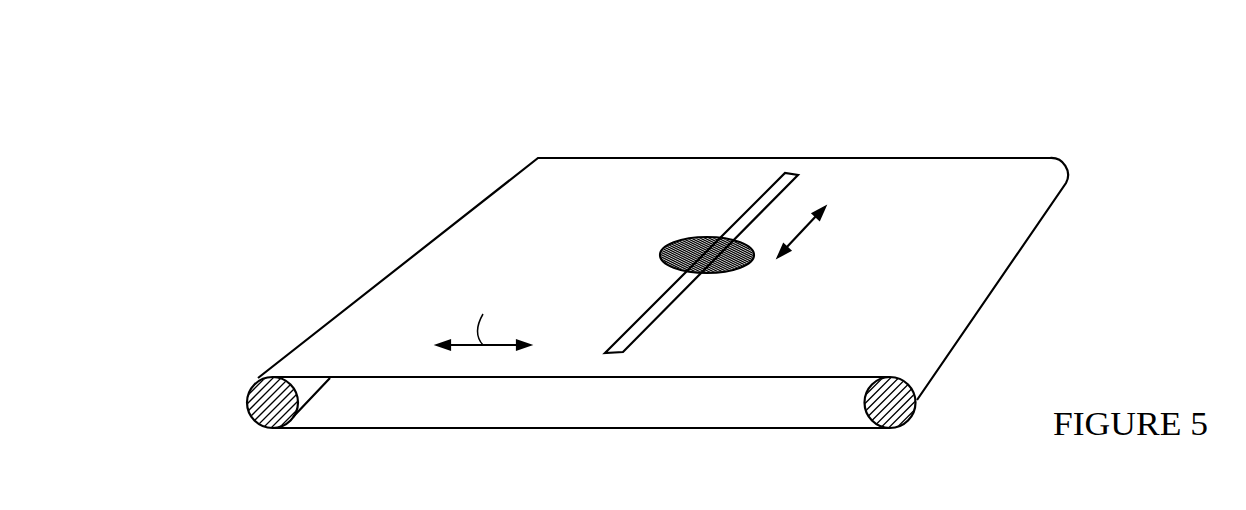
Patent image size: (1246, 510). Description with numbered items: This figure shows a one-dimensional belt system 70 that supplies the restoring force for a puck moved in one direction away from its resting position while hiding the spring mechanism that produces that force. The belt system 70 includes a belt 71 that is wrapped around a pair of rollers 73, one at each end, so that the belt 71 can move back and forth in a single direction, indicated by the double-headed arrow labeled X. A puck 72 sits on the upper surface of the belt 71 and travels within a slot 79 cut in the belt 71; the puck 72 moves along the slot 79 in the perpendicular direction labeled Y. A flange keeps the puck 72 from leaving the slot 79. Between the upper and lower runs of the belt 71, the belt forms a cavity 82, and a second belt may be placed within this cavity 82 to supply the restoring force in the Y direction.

The one-dimensional belt system 70 is at (627, 273).
The belt 71 is at (952, 158).
The puck 72 is at (684, 243).
The rollers 73 is at (250, 418).
The slot 79 is at (648, 317).
The cavity 82 is at (466, 405).